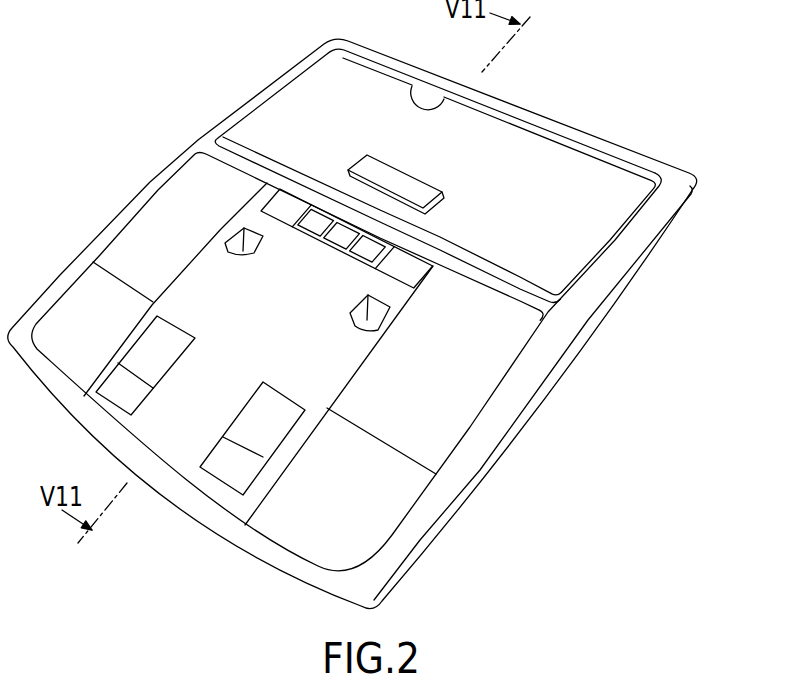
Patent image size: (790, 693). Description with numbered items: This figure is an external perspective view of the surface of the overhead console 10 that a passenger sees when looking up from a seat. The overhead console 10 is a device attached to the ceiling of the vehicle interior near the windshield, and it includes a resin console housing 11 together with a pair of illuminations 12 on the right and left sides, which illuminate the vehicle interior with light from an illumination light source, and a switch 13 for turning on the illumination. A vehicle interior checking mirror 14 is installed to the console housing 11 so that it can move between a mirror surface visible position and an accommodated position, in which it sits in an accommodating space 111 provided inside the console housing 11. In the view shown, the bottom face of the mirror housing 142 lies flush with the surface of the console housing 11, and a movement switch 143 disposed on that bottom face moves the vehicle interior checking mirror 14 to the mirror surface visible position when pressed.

The overhead console 10 is at (577, 98).
The console housing 11 is at (610, 276).
The illumination 12 is at (168, 226).
The switch 13 is at (340, 238).
The vehicle interior checking mirror 14 is at (604, 158).
The accommodating space 111 is at (420, 88).
The mirror housing 142 is at (291, 109).
The movement switch 143 is at (380, 166).